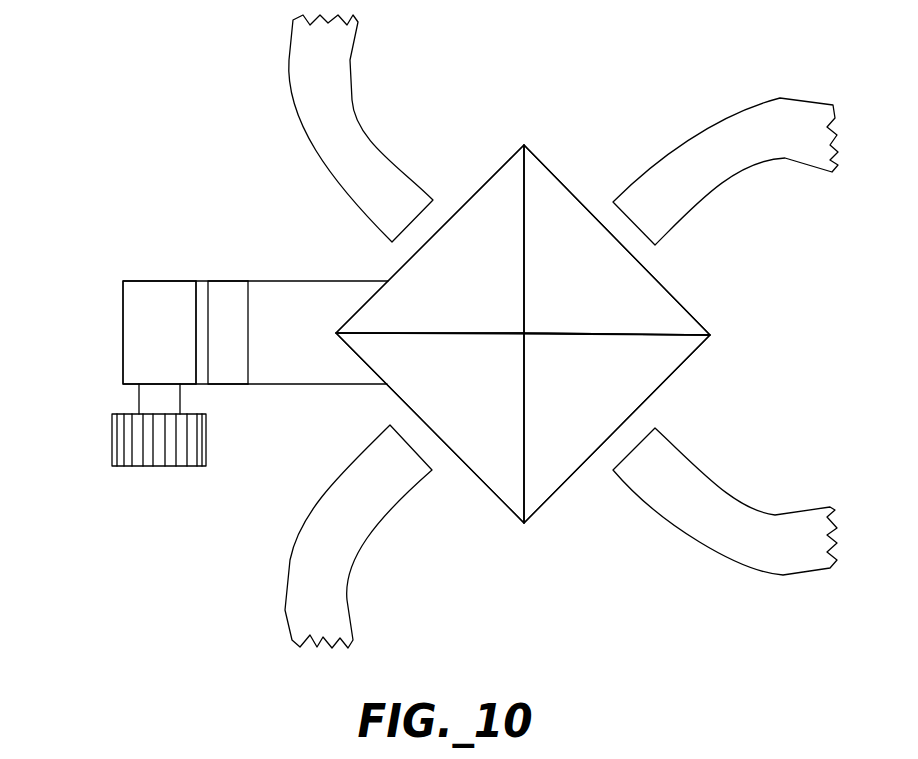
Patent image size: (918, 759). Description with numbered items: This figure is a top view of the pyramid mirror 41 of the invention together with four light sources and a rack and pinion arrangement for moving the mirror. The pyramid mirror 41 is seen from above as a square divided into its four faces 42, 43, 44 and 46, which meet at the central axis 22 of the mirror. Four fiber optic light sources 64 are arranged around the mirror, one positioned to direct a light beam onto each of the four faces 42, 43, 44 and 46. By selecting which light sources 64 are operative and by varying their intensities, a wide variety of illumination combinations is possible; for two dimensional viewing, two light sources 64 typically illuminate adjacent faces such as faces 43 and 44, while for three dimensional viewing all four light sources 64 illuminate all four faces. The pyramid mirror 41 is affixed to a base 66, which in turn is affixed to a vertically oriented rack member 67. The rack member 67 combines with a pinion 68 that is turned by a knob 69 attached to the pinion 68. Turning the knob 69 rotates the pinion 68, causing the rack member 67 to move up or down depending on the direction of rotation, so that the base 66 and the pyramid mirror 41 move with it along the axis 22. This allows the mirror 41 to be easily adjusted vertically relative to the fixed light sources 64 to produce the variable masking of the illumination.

The axis 22 is at (524, 330).
The pyramid mirror 41 is at (660, 388).
The face 42 is at (574, 305).
The face 43 is at (570, 402).
The face 44 is at (429, 400).
The face 46 is at (430, 300).
The fiber optic light source 64 is at (301, 88).
The base 66 is at (318, 283).
The rack member 67 is at (229, 285).
The pinion 68 is at (133, 335).
The knob 69 is at (173, 463).